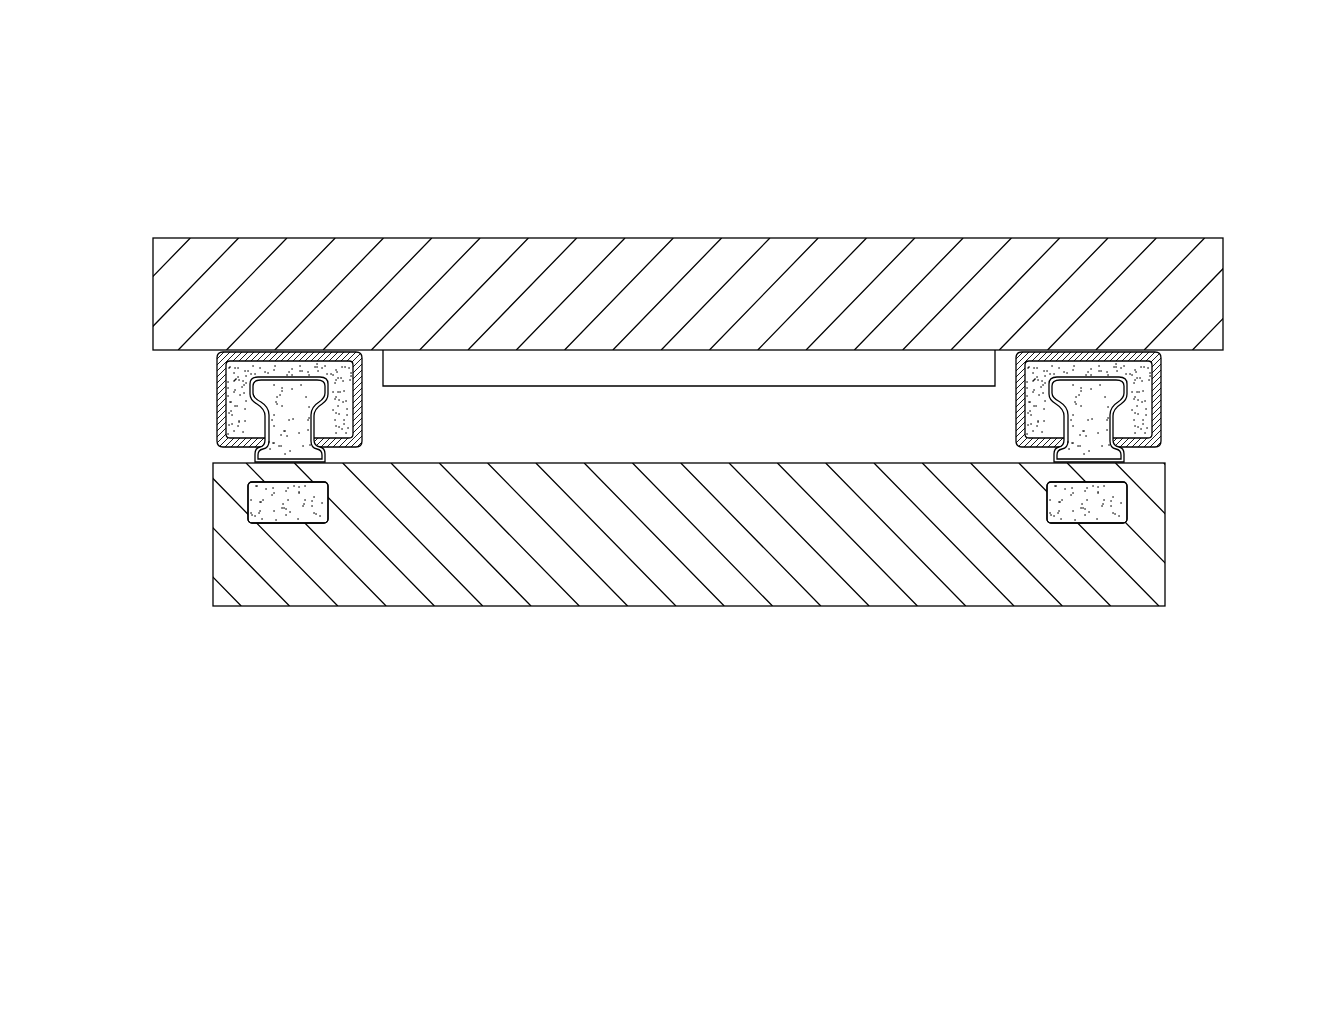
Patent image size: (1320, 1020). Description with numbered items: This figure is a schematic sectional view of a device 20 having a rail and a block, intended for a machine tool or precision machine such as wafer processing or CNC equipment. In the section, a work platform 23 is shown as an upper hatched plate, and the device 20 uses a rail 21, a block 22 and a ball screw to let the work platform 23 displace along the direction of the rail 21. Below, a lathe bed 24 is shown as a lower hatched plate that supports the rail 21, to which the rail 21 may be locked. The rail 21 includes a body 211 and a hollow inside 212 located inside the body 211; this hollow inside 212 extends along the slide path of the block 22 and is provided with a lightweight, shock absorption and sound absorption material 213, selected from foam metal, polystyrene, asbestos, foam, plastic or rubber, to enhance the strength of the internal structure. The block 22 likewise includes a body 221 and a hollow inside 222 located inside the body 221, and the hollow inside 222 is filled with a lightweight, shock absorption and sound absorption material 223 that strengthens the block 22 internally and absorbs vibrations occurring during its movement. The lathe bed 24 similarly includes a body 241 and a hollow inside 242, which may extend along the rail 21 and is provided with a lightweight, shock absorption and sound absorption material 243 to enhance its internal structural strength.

The device having a rail and a block 20 is at (143, 179).
The rail 21 is at (229, 455).
The body 211 is at (265, 459).
The hollow inside 212 is at (229, 455).
The lightweight, shock absorption and sound absorption material 213 is at (235, 455).
The block 22 is at (1149, 438).
The body 221 is at (1132, 399).
The hollow inside 222 is at (1143, 393).
The lightweight, shock absorption and sound absorption material 223 is at (1137, 430).
The work platform 23 is at (1083, 289).
The lathe bed 24 is at (654, 590).
The body 241 is at (400, 593).
The hollow inside 242 is at (675, 577).
The lightweight, shock absorption and sound absorption material 243 is at (297, 505).